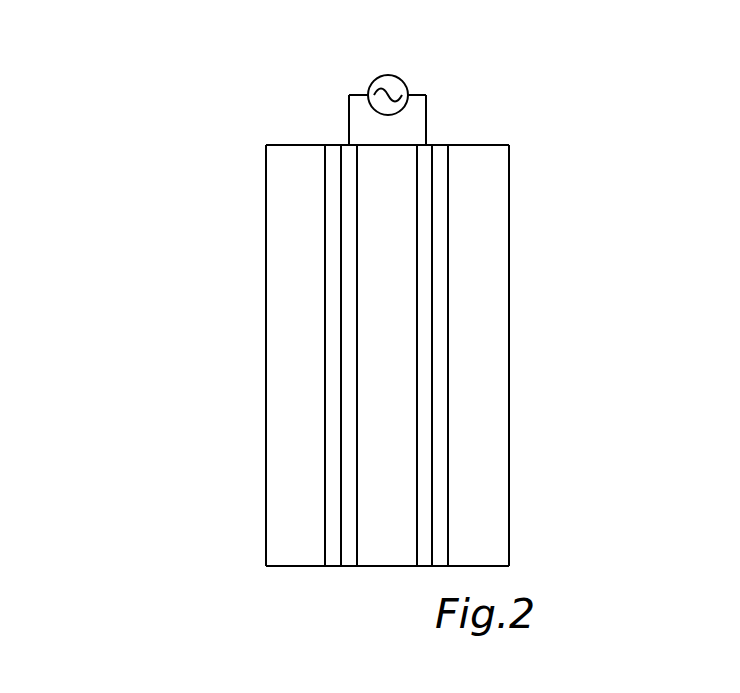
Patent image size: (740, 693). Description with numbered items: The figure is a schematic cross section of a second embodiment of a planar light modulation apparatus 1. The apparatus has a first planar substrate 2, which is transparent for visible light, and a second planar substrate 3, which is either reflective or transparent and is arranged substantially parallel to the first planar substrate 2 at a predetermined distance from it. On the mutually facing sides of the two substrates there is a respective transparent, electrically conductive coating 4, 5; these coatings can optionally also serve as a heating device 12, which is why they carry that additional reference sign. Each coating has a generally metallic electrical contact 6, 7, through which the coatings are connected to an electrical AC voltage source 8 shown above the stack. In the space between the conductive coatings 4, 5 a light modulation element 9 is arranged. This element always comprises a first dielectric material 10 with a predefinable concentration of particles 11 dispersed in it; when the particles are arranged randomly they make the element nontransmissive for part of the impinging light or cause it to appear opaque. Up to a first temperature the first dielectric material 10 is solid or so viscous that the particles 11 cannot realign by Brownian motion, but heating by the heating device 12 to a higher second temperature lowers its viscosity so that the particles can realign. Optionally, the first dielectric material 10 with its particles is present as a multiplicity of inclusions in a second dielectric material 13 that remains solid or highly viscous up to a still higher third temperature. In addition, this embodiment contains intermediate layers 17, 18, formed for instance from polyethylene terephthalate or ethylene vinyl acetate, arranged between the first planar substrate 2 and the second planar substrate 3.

The light modulation apparatus 1 is at (553, 182).
The first planar substrate 2 is at (283, 263).
The second planar substrate 3 is at (468, 253).
The transparent, electrically conductive coating 4 is at (350, 398).
The transparent, electrically conductive coating 5 is at (427, 346).
The electrical contact 6 is at (349, 122).
The electrical contact 7 is at (426, 123).
The electrical AC voltage source 8 is at (393, 75).
The light modulation element 9 is at (227, 355).
The first dielectric material 10 is at (387, 355).
The particles 11 is at (387, 355).
The heating device 12 is at (383, 355).
The second dielectric material 13 is at (378, 522).
The intermediate layer 17 is at (332, 332).
The intermediate layer 18 is at (437, 442).